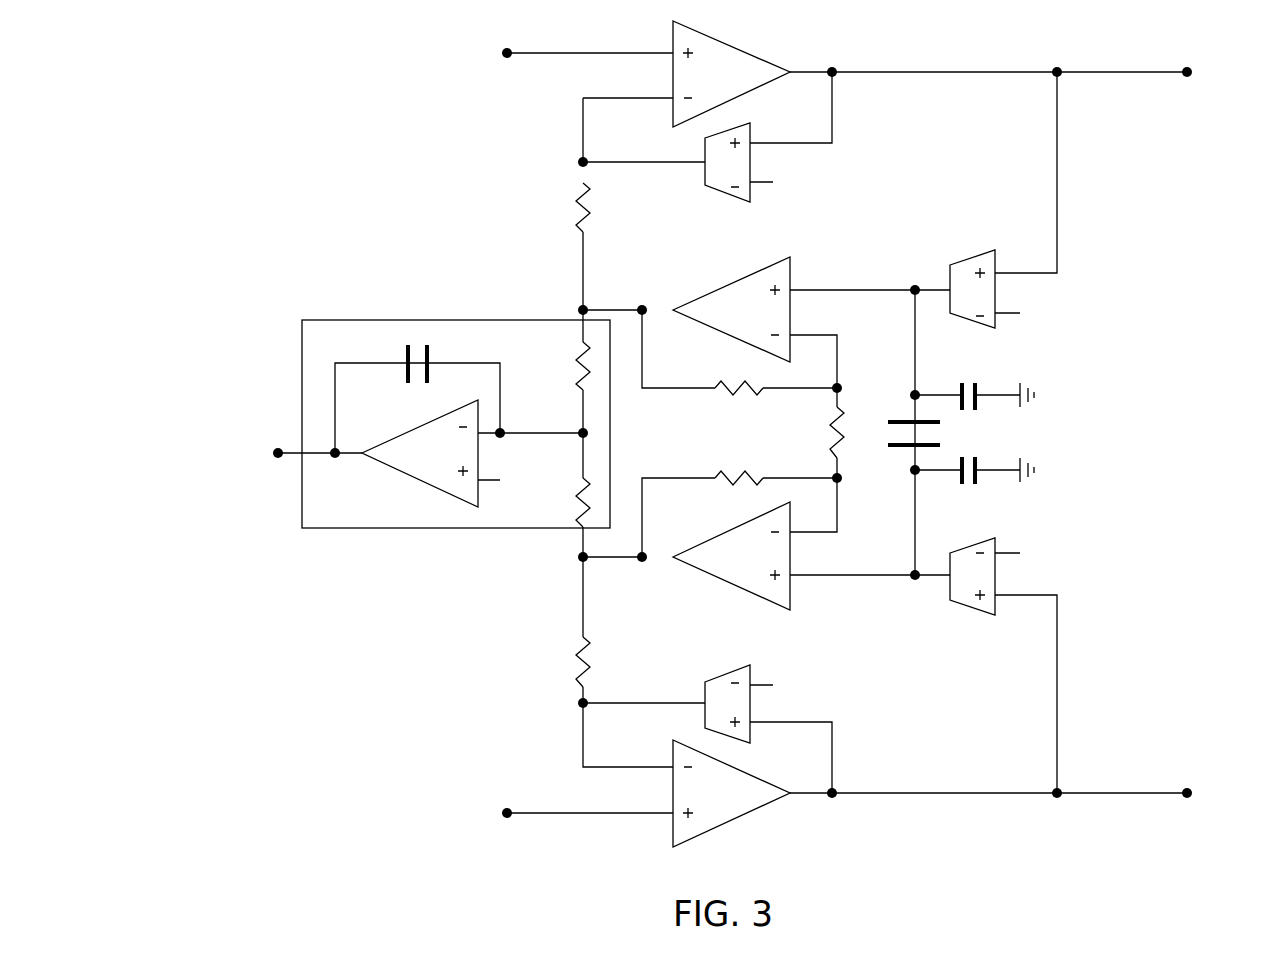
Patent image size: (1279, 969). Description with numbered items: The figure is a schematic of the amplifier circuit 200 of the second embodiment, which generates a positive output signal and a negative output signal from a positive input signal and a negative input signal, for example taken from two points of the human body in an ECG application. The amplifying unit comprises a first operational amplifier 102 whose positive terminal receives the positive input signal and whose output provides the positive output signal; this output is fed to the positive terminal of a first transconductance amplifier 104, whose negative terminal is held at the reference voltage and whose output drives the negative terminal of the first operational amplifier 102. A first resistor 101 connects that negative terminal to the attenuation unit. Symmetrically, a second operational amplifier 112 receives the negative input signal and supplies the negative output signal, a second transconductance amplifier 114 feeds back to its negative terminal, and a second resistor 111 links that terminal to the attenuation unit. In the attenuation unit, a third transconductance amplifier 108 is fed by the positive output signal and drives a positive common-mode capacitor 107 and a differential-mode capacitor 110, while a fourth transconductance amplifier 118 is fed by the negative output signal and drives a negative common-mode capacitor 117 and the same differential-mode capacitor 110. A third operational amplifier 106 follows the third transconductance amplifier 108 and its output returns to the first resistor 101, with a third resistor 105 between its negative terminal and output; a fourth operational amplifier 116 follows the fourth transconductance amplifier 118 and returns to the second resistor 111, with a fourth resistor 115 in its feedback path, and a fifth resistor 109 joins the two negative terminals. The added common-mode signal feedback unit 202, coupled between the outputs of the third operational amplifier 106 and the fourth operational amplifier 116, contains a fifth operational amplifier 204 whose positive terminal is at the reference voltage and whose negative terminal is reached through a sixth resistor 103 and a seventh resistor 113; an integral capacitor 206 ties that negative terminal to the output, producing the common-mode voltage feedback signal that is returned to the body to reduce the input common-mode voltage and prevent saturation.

The amplifier circuit 200 is at (668, 431).
The first resistor 101 is at (562, 207).
The first operational amplifier 102 is at (745, 89).
The sixth resistor 103 is at (563, 366).
The first transconductance amplifier 104 is at (746, 178).
The third resistor 105 is at (739, 379).
The third operational amplifier 106 is at (765, 327).
The positive common-mode capacitor 107 is at (971, 382).
The third transconductance amplifier 108 is at (991, 306).
The fifth resistor 109 is at (819, 432).
The differential-mode capacitor 110 is at (906, 421).
The second resistor 111 is at (562, 662).
The second operational amplifier 112 is at (745, 809).
The seventh resistor 113 is at (563, 502).
The second transconductance amplifier 114 is at (746, 718).
The fourth resistor 115 is at (739, 491).
The fourth operational amplifier 116 is at (765, 572).
The negative common-mode capacitor 117 is at (971, 489).
The fourth transconductance amplifier 118 is at (991, 590).
The common-mode signal feedback unit 202 is at (373, 320).
The fifth operational amplifier 204 is at (449, 468).
The integral capacitor 206 is at (417, 385).